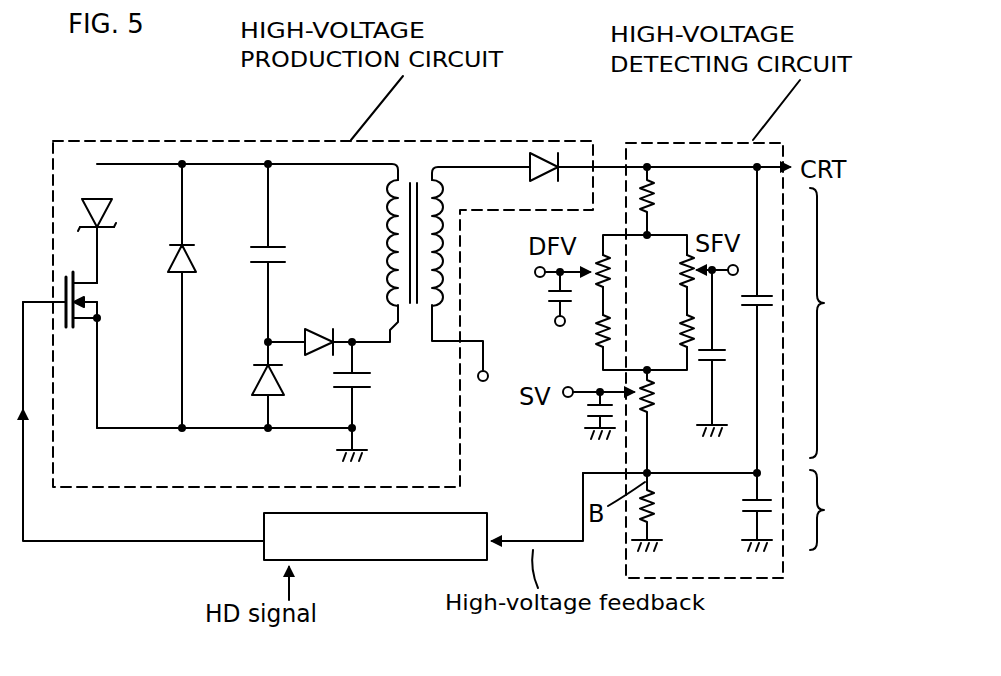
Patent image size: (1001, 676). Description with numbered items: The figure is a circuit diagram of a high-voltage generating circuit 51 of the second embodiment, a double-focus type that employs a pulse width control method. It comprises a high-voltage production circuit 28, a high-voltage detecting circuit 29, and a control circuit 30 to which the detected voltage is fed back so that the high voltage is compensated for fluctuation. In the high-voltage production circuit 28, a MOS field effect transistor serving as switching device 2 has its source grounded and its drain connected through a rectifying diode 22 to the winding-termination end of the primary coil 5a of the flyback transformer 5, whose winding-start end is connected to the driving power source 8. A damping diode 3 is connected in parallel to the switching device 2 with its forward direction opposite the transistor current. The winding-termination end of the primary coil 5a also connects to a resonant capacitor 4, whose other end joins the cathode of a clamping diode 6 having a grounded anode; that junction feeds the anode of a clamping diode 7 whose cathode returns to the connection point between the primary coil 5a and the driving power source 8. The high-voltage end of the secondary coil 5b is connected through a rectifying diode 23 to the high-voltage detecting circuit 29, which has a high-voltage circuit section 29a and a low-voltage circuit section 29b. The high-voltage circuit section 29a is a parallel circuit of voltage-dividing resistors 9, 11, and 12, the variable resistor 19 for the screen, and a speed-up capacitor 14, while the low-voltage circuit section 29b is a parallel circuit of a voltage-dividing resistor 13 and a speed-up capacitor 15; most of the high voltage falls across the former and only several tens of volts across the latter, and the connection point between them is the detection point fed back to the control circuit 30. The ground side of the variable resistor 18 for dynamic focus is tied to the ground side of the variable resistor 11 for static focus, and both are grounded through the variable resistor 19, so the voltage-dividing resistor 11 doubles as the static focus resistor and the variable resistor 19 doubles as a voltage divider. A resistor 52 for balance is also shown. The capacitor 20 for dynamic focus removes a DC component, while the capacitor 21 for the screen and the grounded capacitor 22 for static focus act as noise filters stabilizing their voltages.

The high-voltage generating circuit 51 is at (127, 117).
The high-voltage production circuit 28 is at (280, 140).
The high-voltage detecting circuit 29 is at (672, 142).
The high-voltage circuit section 29a is at (845, 323).
The low-voltage circuit section 29b is at (845, 510).
The switching device 2 is at (87, 325).
The damping diode 3 is at (172, 273).
The resonant capacitor 4 is at (276, 245).
The flyback transformer 5 is at (428, 235).
The primary coil 5a is at (378, 240).
The secondary coil 5b is at (458, 198).
The clamping diode 6 is at (256, 380).
The clamping diode 7 is at (318, 330).
The driving power source 8 is at (372, 380).
The voltage-dividing resistor 9 is at (655, 196).
The voltage-dividing resistor 11 is at (676, 271).
The voltage-dividing resistor 12 is at (680, 321).
The voltage-dividing resistor 13 is at (657, 506).
The speed-up capacitor 14 is at (765, 308).
The speed-up capacitor 15 is at (765, 515).
The variable resistor for dynamic focus 18 is at (612, 263).
The variable resistor for a screen 19 is at (657, 398).
The capacitor for dynamic focus 20 is at (552, 302).
The capacitor for a screen 21 is at (582, 398).
The rectifying diode / capacitor for static focus 22 is at (108, 210).
The rectifying diode 23 is at (545, 152).
The control circuit 30 is at (362, 562).
The resistor for balance 52 is at (596, 344).